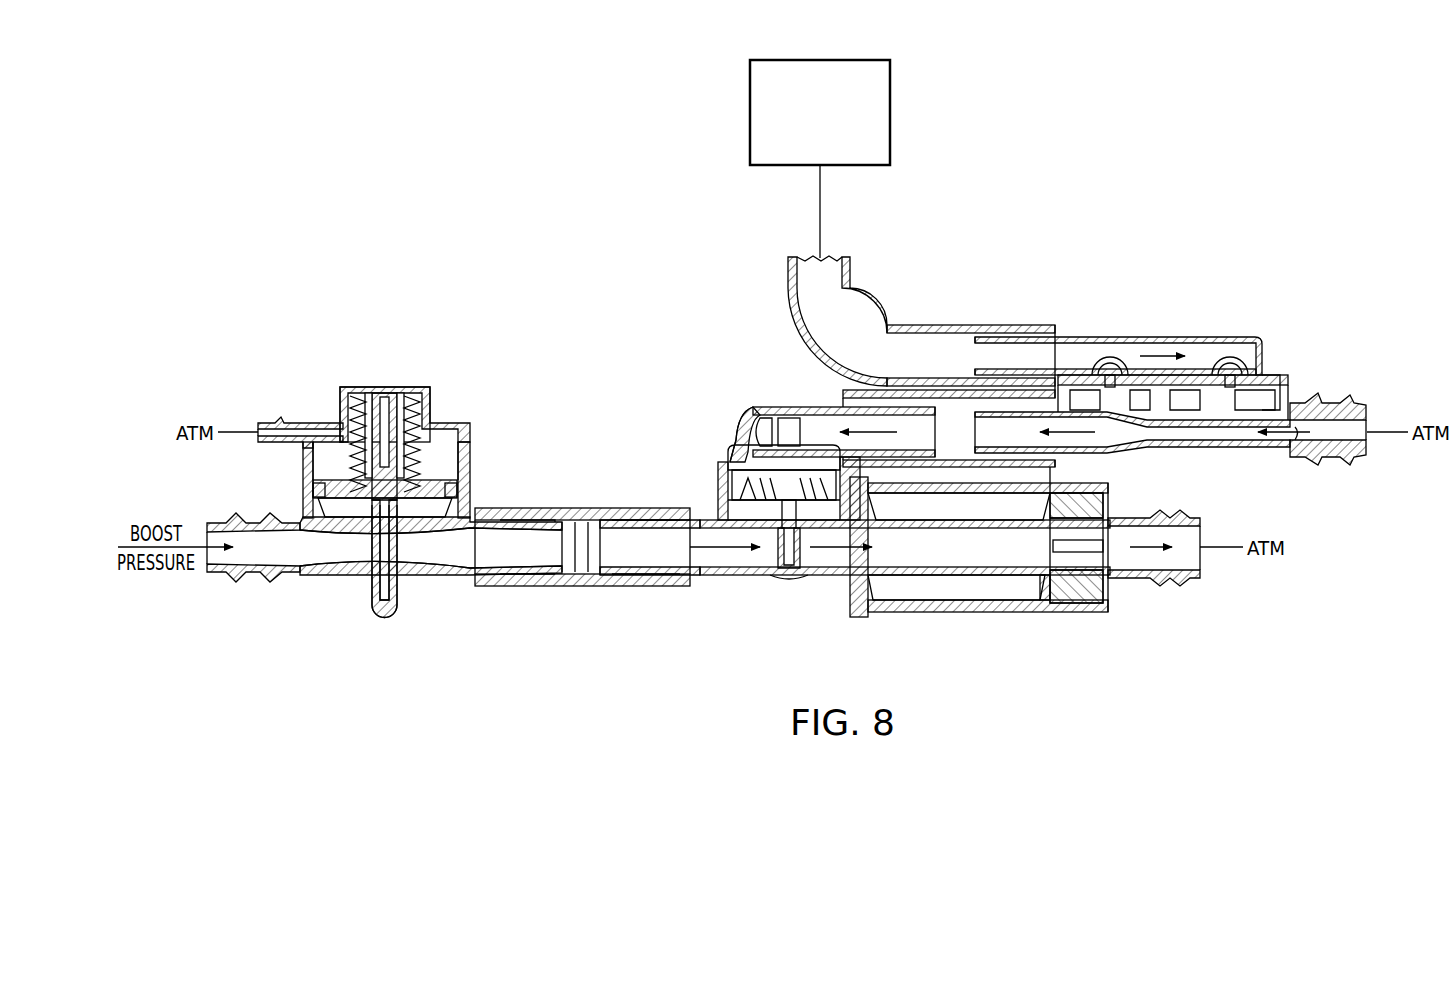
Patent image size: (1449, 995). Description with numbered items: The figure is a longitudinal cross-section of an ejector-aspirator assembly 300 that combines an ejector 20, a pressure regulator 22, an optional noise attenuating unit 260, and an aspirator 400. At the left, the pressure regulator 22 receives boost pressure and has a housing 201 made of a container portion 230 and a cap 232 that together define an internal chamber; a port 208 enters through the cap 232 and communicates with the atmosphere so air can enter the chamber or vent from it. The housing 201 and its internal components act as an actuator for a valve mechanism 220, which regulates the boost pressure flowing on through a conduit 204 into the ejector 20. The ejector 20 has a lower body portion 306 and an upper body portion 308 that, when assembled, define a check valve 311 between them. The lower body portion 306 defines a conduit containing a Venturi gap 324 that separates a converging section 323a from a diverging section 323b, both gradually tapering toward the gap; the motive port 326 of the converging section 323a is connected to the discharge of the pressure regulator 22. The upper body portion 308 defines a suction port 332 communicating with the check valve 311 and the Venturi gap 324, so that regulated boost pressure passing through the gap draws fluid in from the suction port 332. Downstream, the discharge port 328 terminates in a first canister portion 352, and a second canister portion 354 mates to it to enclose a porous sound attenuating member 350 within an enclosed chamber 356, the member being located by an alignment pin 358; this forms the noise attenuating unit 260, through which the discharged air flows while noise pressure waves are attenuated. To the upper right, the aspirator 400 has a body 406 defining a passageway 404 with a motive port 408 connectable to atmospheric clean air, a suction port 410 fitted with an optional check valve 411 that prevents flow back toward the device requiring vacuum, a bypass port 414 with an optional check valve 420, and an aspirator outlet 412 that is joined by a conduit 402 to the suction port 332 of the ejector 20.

The ejector-aspirator assembly 300 is at (1178, 105).
The pressure regulator 22 is at (305, 366).
The housing 201 is at (488, 461).
The port 208 is at (272, 420).
The cap 232 is at (470, 396).
The container portion 230 is at (298, 478).
The valve mechanism 220 is at (378, 579).
The conduit 204 is at (520, 586).
The motive port 326 is at (645, 574).
The converging section 323a is at (650, 522).
The lower body portion 306 is at (735, 577).
The Venturi gap 324 is at (795, 572).
The ejector 20 is at (722, 413).
The check valve 311 is at (735, 472).
The upper body portion 308 is at (757, 412).
The suction port 332 is at (778, 428).
The conduit 402 is at (940, 393).
The noise attenuating unit 260 is at (982, 610).
The discharge port 328 is at (967, 520).
The aspirator outlet 412 is at (1005, 468).
The diverging section 323b is at (903, 582).
The first canister portion 352 is at (1045, 592).
The second canister portion 354 is at (1110, 495).
The alignment pin 358 is at (1080, 545).
The enclosed chamber 356 is at (1090, 602).
The porous sound attenuating member 350 is at (1103, 583).
The aspirator 400 is at (1300, 324).
The suction port 410 is at (1200, 345).
The bypass port 414 is at (1112, 372).
The check valve 411 is at (1265, 388).
The check valve 420 is at (1078, 387).
The body 406 is at (1205, 455).
The motive port 408 is at (1350, 456).
The passageway 404 is at (1318, 440).